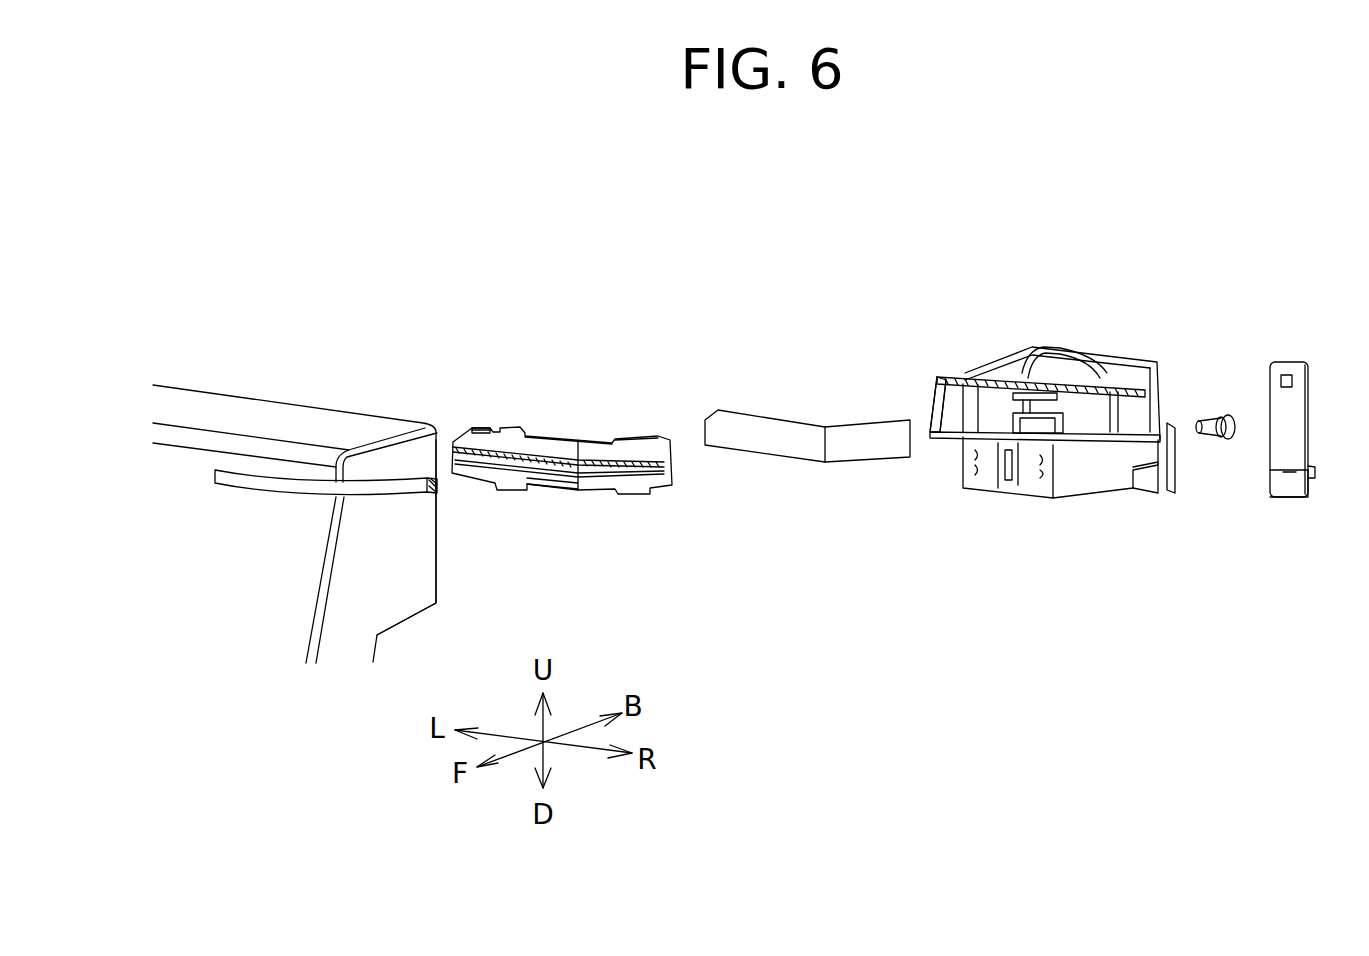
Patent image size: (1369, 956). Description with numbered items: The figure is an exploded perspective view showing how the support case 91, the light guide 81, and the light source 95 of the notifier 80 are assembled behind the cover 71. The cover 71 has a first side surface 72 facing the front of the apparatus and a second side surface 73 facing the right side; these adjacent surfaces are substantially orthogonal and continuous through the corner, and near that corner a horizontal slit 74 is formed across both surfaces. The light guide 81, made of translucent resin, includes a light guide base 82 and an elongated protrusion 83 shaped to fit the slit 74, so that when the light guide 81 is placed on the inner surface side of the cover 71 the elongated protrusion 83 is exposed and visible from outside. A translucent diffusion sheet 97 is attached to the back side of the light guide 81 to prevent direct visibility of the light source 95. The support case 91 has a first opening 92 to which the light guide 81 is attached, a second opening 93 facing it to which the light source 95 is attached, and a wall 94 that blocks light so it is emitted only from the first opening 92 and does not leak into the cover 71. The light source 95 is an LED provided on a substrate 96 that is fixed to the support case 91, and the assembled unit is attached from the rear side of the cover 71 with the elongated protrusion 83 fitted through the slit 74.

The cover 71 is at (284, 403).
The first side surface 72 is at (289, 630).
The second side surface 73 is at (366, 602).
The slit 74 is at (247, 487).
The notifier 80 is at (915, 300).
The light guide 81 is at (568, 440).
The light guide base 82 is at (487, 434).
The elongated protrusion 83 is at (553, 470).
The support case 91 is at (1118, 358).
The first opening 92 is at (937, 392).
The second opening 93 is at (1043, 408).
The wall 94 is at (1087, 436).
The light source 95 is at (1288, 372).
The substrate 96 is at (1288, 490).
The diffusion sheet 97 is at (771, 440).